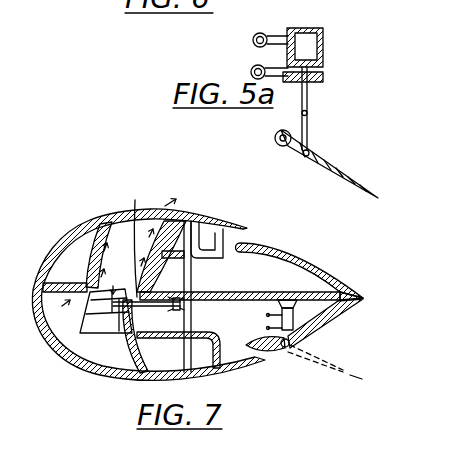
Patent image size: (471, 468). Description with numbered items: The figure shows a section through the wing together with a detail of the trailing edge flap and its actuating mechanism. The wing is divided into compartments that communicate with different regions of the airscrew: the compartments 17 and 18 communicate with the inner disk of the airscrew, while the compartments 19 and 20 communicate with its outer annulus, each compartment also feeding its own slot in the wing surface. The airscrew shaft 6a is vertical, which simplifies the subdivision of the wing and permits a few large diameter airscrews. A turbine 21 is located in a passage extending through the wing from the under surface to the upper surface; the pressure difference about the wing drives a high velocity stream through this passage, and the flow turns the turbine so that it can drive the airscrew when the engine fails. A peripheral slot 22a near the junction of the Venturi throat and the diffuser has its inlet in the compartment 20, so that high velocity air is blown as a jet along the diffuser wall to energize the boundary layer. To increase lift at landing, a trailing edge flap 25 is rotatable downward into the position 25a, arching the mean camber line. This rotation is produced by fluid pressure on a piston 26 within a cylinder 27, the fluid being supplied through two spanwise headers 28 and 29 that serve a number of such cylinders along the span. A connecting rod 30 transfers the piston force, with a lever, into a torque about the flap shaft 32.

In FIG. 5a, the trailing edge flap 25 is at (355, 155).
In FIG. 7, the flap lowered position 25a is at (340, 371).
In FIG. 5a, the piston 26 is at (298, 62).
In FIG. 5a, the cylinder 27 is at (323, 72).
In FIG. 7, the cylinder 27 is at (294, 321).
In FIG. 5a, the header 28 is at (257, 33).
In FIG. 5a, the header 29 is at (254, 69).
In FIG. 5a, the connecting rod 30 is at (309, 97).
In FIG. 5a, the flap shaft 32 is at (275, 139).
In FIG. 7, the compartment 17 is at (199, 236).
In FIG. 7, the compartment 18 is at (175, 364).
In FIG. 7, the compartment 19 is at (262, 289).
In FIG. 7, the compartment 20 is at (249, 332).
In FIG. 7, the turbine 21 is at (100, 317).
In FIG. 7, the peripheral slot 22a is at (143, 234).
In FIG. 7, the airscrew shaft 6a is at (184, 276).